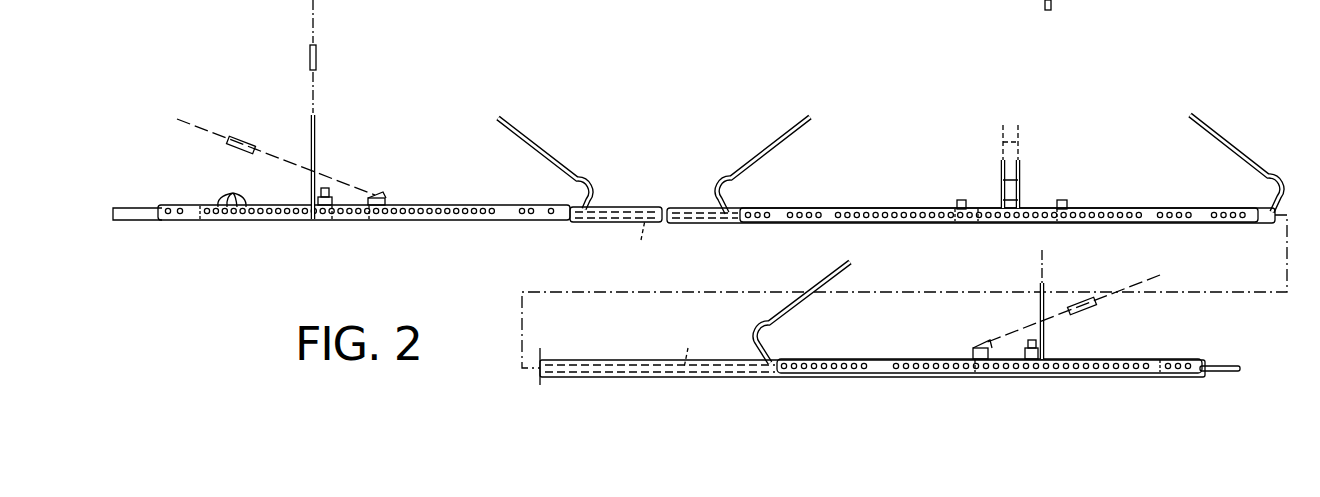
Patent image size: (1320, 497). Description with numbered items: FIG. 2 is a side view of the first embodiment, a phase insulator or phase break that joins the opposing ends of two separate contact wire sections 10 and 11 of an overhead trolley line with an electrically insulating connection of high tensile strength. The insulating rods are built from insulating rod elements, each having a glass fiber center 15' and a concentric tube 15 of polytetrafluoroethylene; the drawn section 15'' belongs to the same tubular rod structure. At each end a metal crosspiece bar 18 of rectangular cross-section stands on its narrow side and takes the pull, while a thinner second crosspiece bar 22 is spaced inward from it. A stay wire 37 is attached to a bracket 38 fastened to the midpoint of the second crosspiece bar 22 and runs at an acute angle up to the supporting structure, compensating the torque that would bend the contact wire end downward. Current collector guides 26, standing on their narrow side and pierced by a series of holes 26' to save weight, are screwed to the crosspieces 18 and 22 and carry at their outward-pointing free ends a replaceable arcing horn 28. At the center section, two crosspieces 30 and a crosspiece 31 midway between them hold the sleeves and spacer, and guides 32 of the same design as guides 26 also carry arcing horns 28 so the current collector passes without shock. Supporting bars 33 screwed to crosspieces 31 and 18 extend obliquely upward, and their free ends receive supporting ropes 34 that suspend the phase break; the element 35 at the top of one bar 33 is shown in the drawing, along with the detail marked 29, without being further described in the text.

The contact wire section 10 is at (146, 197).
The contact wire section 11 is at (1212, 365).
The tube 15 is at (907, 281).
The center 15' is at (680, 346).
The tubular frame member section 15'' is at (621, 241).
The crosspiece bar 18 is at (330, 199).
The second crosspiece bar 22 is at (985, 361).
The current collector guide 26 is at (708, 307).
The holes 26' is at (233, 186).
The arcing horn 28 is at (553, 158).
The nut 29 is at (323, 189).
The crosspiece 30 is at (958, 202).
The crosspiece 31 is at (1018, 204).
The guide 32 is at (831, 209).
The supporting bar 33 is at (316, 128).
The supporting rope 34 is at (318, 80).
The post extension 35 is at (317, 58).
The stay wire 37 is at (218, 104).
The bracket 38 is at (386, 197).